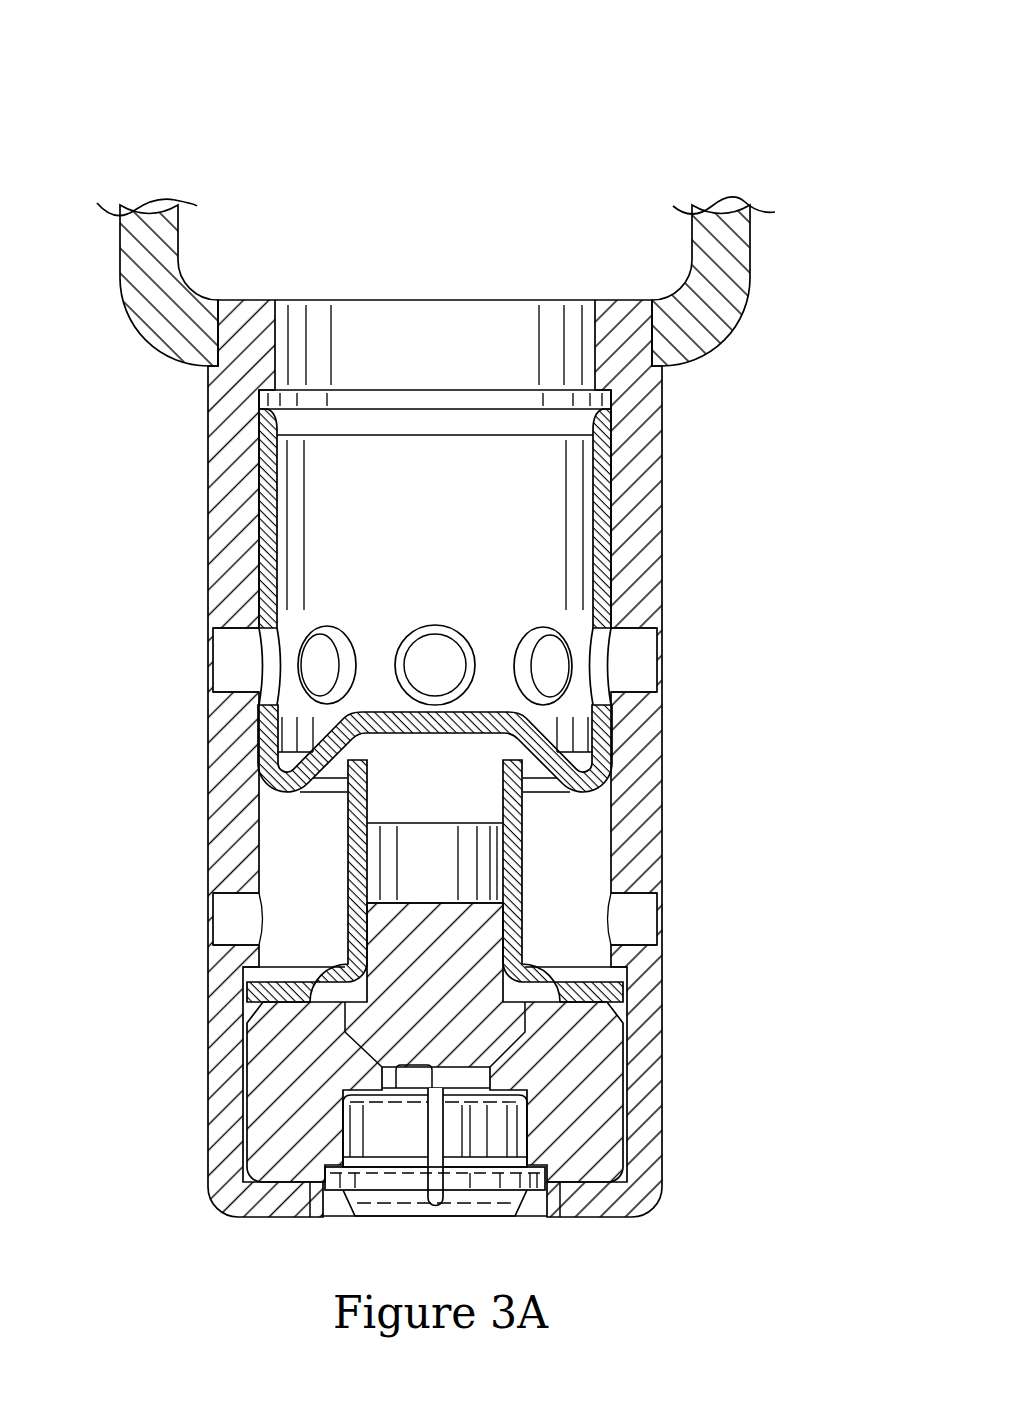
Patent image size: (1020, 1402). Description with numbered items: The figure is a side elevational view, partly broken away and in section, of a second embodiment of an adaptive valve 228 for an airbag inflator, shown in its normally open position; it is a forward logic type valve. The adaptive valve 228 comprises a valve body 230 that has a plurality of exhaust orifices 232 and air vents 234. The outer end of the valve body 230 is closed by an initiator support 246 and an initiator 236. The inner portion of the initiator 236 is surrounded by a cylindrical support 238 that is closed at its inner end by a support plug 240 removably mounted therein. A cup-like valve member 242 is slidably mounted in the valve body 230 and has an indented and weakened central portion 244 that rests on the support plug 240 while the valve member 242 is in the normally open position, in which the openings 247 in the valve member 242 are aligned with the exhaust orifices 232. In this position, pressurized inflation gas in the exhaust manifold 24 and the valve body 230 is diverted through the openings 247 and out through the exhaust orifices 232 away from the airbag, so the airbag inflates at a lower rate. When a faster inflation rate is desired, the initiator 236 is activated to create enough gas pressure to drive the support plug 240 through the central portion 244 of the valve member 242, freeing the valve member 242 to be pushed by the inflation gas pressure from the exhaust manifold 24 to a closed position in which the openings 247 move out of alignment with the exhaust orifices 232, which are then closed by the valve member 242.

The adaptive valve 228 is at (90, 111).
The exhaust manifold 24 is at (722, 221).
The valve body 230 is at (640, 448).
The exhaust orifices 232 is at (227, 663).
The air vents 234 is at (638, 923).
The initiator 236 is at (372, 1028).
The cylindrical support 238 is at (512, 848).
The support plug 240 is at (485, 813).
The valve member 242 is at (610, 558).
The central portion 244 is at (400, 728).
The initiator support 246 is at (312, 1128).
The openings 247 is at (545, 652).